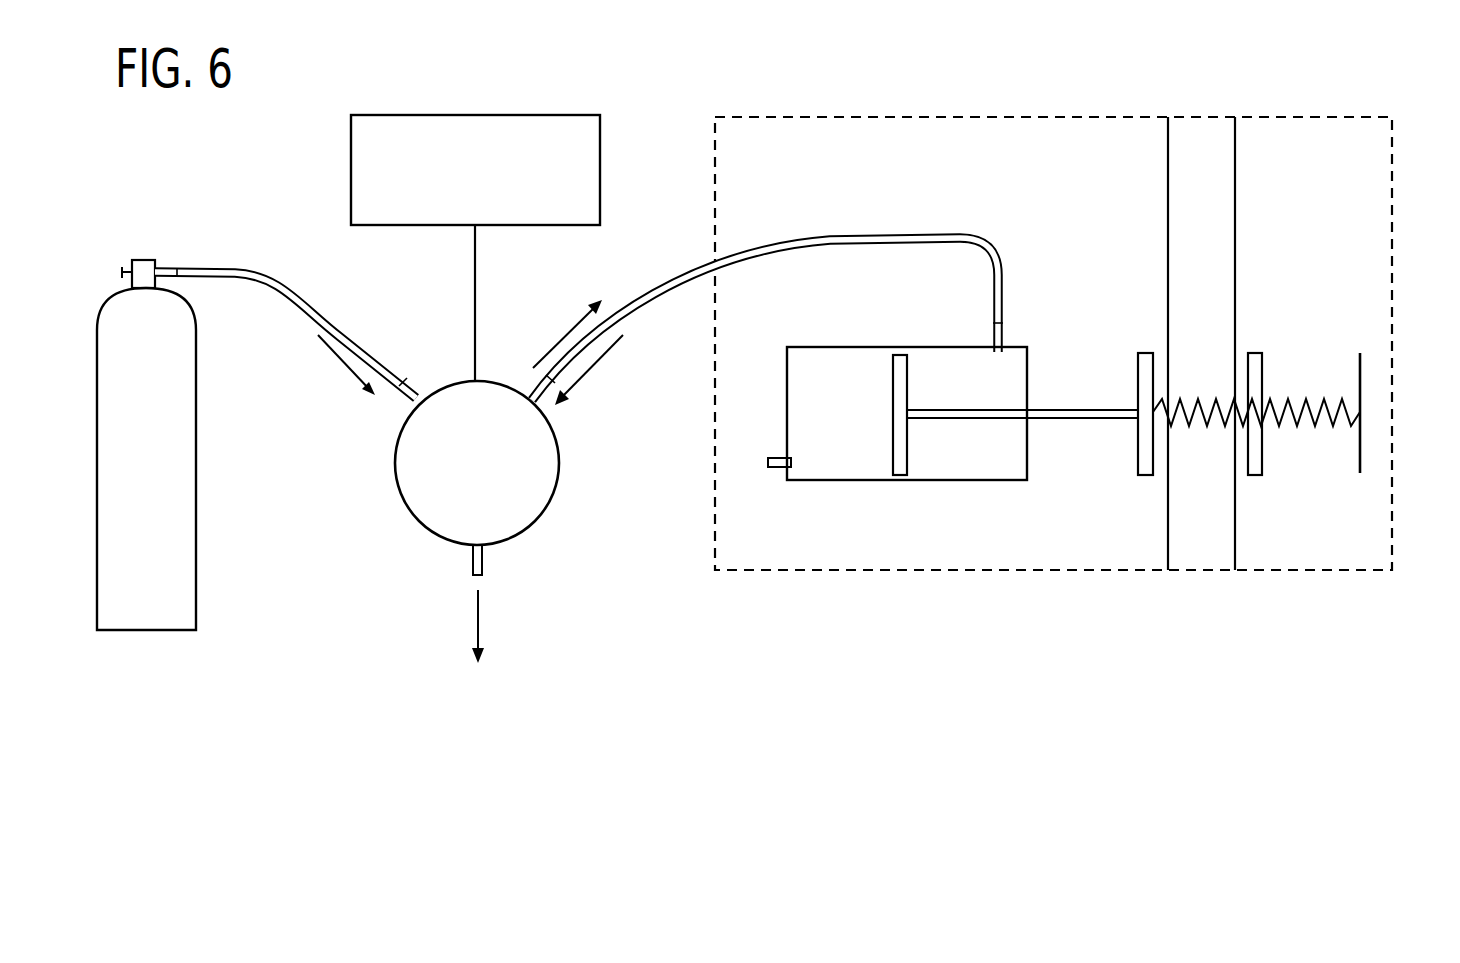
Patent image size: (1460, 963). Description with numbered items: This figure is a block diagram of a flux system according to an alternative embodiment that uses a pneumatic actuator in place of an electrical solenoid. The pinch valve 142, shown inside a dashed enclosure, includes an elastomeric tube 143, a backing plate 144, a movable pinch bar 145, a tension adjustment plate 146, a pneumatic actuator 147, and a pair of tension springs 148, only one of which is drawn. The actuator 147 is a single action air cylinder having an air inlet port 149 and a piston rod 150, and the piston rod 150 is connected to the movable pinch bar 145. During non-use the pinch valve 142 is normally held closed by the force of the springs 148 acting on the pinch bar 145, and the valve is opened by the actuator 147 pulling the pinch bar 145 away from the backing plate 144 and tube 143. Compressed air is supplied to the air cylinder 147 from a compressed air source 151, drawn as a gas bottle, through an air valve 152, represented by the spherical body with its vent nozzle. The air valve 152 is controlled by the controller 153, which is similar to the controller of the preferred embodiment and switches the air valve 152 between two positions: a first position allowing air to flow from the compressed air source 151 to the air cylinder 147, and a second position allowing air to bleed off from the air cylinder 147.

The pinch valve 142 is at (818, 117).
The elastomeric tube 143 is at (1235, 138).
The backing plate 144 is at (1262, 460).
The movable pinch bar 145 is at (1138, 463).
The tension adjustment plate 146 is at (1360, 425).
The pneumatic actuator 147 is at (875, 481).
The tension springs 148 is at (1295, 400).
The air inlet port 149 is at (1003, 336).
The piston rod 150 is at (1104, 420).
The compressed air source 151 is at (196, 570).
The air valve 152 is at (443, 538).
The controller 153 is at (497, 115).